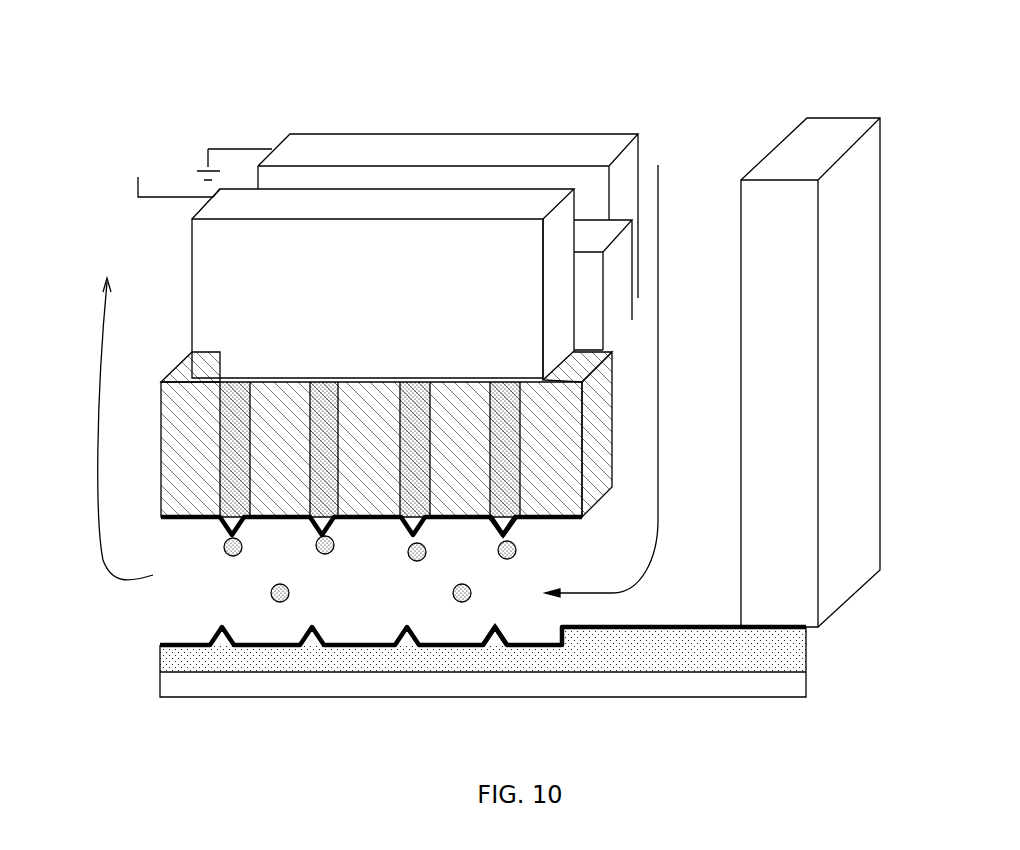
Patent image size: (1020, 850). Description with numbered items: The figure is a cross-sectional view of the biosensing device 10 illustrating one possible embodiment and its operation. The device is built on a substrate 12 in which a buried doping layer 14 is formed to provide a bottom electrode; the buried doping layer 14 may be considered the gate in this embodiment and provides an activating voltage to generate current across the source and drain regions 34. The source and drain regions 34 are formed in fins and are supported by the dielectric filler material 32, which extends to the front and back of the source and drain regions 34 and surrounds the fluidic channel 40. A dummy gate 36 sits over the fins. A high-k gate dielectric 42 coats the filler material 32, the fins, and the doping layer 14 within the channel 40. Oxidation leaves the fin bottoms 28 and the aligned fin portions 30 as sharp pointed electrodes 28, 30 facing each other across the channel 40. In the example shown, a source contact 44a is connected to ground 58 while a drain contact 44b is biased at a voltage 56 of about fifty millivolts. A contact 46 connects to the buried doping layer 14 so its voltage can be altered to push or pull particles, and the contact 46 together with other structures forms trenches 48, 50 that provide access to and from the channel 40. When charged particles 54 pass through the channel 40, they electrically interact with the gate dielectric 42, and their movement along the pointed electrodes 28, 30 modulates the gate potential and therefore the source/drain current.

The biosensing device 10 is at (443, 32).
The substrate 12 is at (806, 690).
The buried doping layer 14 is at (642, 648).
The fin bottoms 28 is at (513, 525).
The fin portions 30 is at (485, 622).
The filler material 32 is at (587, 468).
The source and drain regions 34 is at (418, 427).
The dummy gate 36 is at (613, 305).
The fluidic channel 40 is at (330, 605).
The gate dielectric 42 is at (543, 522).
The source contact 44a is at (207, 308).
The drain contact 44b is at (392, 134).
The contact 46 is at (768, 160).
The trench 48 is at (678, 216).
The trench 50 is at (123, 318).
The particles 54 is at (230, 562).
The voltage 56 is at (138, 200).
The ground 58 is at (230, 148).